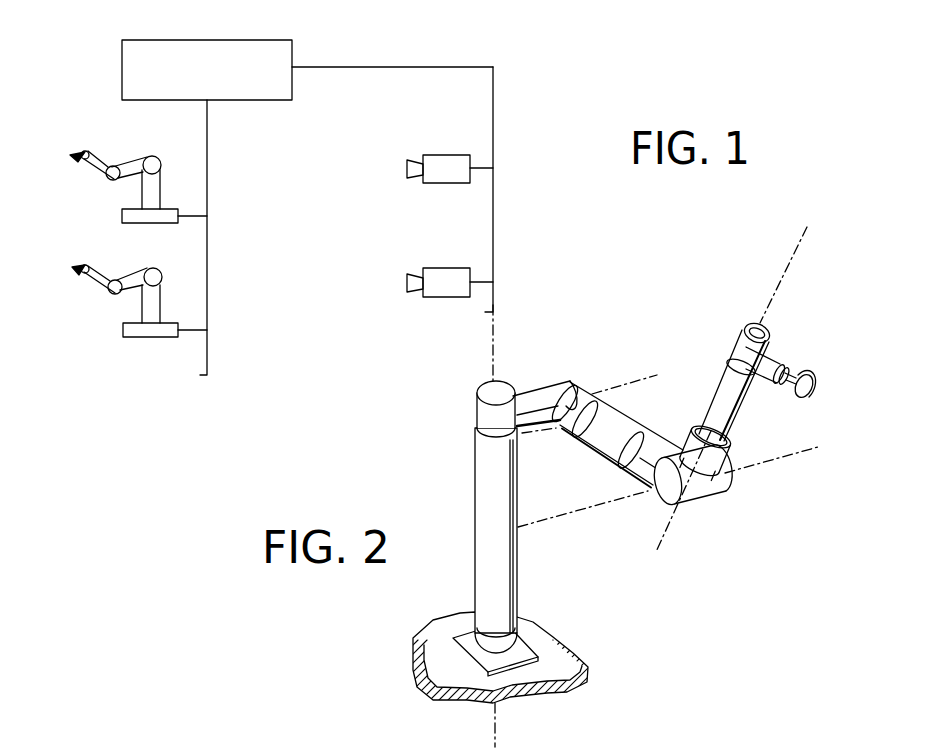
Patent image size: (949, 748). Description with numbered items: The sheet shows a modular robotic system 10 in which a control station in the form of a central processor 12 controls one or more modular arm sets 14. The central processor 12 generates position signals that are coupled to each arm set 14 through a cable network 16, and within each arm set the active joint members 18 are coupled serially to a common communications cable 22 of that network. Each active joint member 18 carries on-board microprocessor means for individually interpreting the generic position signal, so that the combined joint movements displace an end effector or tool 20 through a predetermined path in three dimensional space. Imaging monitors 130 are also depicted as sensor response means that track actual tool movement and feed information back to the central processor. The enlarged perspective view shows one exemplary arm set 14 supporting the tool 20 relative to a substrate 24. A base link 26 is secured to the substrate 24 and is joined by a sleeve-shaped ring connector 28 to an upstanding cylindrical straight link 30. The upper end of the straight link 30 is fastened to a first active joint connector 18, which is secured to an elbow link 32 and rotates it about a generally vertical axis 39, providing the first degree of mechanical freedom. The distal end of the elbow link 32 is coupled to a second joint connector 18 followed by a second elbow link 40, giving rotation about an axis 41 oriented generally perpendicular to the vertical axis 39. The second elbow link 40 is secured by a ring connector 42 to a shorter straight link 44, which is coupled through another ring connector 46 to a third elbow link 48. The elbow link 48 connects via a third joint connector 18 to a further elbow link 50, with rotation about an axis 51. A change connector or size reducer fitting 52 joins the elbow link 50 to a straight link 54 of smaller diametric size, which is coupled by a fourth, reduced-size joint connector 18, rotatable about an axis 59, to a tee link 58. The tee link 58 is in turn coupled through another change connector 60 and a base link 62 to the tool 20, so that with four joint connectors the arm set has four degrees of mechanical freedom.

In FIG. 1, the modular robotic system 10 is at (342, 56).
In FIG. 1, the central processor 12 is at (240, 40).
In FIG. 1, the arm set 14 is at (97, 190).
In FIG. 2, the arm set 14 is at (704, 548).
In FIG. 1, the cable network 16 is at (212, 270).
In FIG. 1, the active joint connector 18 is at (110, 165).
In FIG. 2, the active joint connector 18 is at (572, 380).
In FIG. 1, the end effector or tool 20 is at (77, 155).
In FIG. 2, the end effector or tool 20 is at (815, 388).
In FIG. 1, the communications cable 22 is at (196, 217).
In FIG. 2, the substrate 24 is at (585, 683).
In FIG. 2, the base link 26 is at (507, 640).
In FIG. 2, the ring connector 28 is at (495, 635).
In FIG. 2, the straight link 30 is at (480, 497).
In FIG. 2, the elbow link 32 is at (527, 393).
In FIG. 2, the vertical axis 39 is at (490, 352).
In FIG. 2, the second elbow link 40 is at (608, 412).
In FIG. 2, the axis 41 is at (480, 418).
In FIG. 2, the ring connector 42 is at (571, 433).
In FIG. 2, the shorter straight link 44 is at (627, 416).
In FIG. 2, the ring connector 46 is at (635, 468).
In FIG. 2, the third elbow link 48 is at (660, 489).
In FIG. 2, the elbow link 50 is at (726, 473).
In FIG. 2, the axis 51 is at (800, 455).
In FIG. 2, the change connector or size reducer fitting 52 is at (733, 440).
In FIG. 2, the straight link 54 is at (735, 398).
In FIG. 2, the tee link 58 is at (760, 328).
In FIG. 2, the axis 59 is at (790, 252).
In FIG. 2, the change connector 60 is at (783, 362).
In FIG. 2, the base link 62 is at (790, 370).
In FIG. 1, the imaging monitors 130 is at (440, 268).